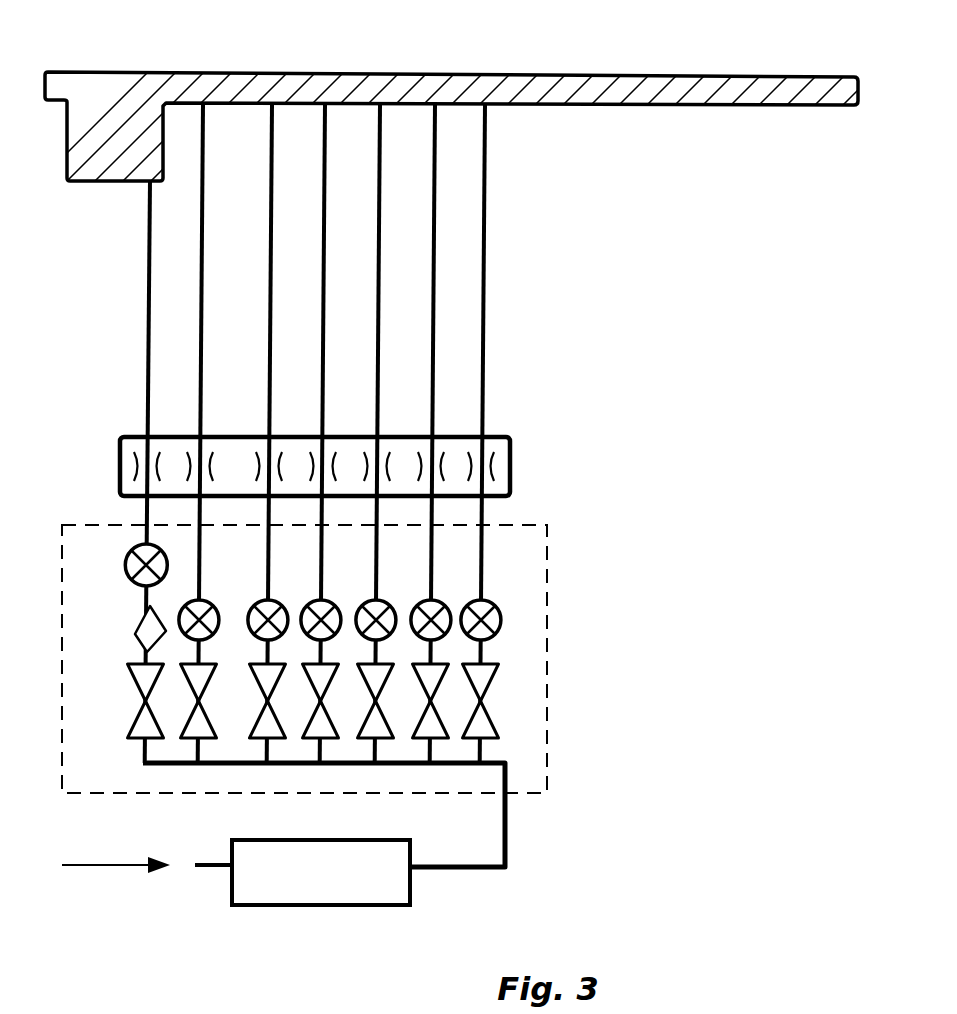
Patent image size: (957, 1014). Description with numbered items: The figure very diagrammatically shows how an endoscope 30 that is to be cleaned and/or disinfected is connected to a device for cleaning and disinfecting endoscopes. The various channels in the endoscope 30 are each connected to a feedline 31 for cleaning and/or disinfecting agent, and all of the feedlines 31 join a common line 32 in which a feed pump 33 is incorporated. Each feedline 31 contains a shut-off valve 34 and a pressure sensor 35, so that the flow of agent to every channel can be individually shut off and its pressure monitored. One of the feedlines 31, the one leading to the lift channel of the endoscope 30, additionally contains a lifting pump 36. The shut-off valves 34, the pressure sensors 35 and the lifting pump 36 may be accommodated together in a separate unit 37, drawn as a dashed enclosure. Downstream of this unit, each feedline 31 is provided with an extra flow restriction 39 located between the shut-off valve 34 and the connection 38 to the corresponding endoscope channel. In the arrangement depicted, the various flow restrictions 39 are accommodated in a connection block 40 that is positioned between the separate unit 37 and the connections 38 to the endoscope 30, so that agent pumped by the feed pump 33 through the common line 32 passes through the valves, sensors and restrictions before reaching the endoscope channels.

The endoscope 30 is at (519, 91).
The feedlines 31 is at (271, 292).
The common line 32 is at (508, 828).
The feed pump 33 is at (245, 885).
The shut-off valve 34 is at (481, 685).
The pressure sensor 35 is at (490, 622).
The lifting pump 36 is at (142, 628).
The separate unit 37 is at (548, 573).
The connection 38 is at (478, 101).
The flow restriction 39 is at (490, 472).
The connection block 40 is at (497, 455).